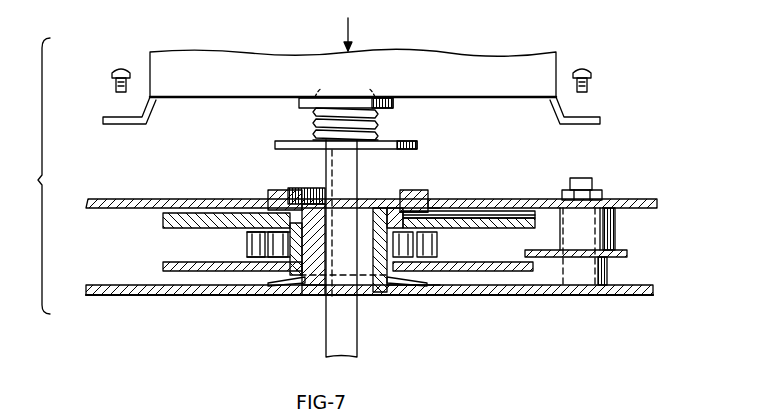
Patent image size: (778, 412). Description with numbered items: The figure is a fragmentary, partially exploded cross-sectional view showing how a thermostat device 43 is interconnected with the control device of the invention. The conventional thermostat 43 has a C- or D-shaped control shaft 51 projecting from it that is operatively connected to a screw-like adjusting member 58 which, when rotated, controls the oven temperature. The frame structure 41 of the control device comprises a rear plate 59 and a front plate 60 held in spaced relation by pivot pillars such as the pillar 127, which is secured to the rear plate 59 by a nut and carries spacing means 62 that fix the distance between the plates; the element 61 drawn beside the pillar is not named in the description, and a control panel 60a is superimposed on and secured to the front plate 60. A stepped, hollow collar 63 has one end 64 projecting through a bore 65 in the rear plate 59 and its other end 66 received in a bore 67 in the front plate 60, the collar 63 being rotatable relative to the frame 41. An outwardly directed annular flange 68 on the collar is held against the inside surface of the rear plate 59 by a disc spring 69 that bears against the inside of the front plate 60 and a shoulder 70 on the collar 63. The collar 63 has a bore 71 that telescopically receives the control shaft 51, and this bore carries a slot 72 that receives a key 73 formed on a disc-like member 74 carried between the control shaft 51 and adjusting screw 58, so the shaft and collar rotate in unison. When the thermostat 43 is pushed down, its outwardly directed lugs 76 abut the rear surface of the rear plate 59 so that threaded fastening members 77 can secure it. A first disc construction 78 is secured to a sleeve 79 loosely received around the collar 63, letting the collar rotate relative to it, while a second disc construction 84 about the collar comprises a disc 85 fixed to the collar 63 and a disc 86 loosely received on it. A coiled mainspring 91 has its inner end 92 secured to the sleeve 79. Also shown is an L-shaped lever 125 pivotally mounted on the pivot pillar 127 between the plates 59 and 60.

The frame structure 41 is at (676, 210).
The thermostat device 43 is at (412, 63).
The control shaft 51 is at (357, 338).
The adjusting member 58 is at (380, 118).
The rear plate 59 is at (137, 198).
The front plate 60 is at (493, 296).
The control panel 60a is at (580, 296).
The post 61 is at (585, 212).
The spacing means 62 is at (613, 210).
The stepped hollow collar 63 is at (388, 206).
The collar end 64 is at (412, 208).
The bore 65 is at (281, 198).
The collar end 66 is at (318, 290).
The bore 67 is at (305, 296).
The annular flange 68 is at (440, 215).
The disc spring 69 is at (407, 290).
The shoulder 70 is at (441, 292).
The bore 71 is at (375, 208).
The slot 72 is at (330, 193).
The key 73 is at (378, 138).
The disc-like member 74 is at (283, 145).
The lugs 76 is at (103, 126).
The threaded fastening members 77 is at (126, 70).
The first disc construction 78 is at (455, 272).
The sleeve 79 is at (420, 244).
The second disc construction 84 is at (525, 212).
The disc 85 is at (495, 219).
The disc 86 is at (462, 218).
The mainspring 91 is at (247, 248).
The inner end 92 is at (283, 277).
The L-shaped lever 125 is at (620, 252).
The pivot pillar 127 is at (580, 178).